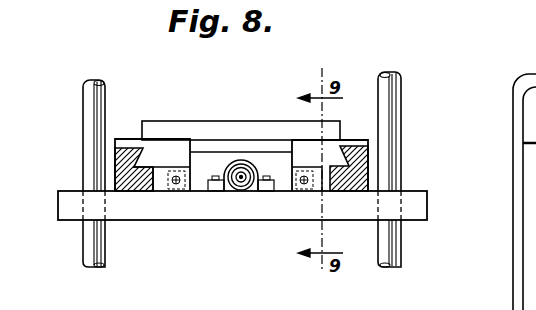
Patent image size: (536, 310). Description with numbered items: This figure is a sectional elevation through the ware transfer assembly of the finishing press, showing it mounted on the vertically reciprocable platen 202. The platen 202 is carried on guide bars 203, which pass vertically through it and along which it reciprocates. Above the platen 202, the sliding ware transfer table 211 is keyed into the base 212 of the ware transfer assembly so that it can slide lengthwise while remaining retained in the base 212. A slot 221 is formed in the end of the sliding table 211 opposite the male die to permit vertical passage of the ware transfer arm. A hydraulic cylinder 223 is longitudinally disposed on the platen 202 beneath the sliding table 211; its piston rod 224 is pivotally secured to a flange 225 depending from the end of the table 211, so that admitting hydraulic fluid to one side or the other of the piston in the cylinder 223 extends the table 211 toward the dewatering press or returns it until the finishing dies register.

The vertically reciprocable platen 202 is at (164, 213).
The guide bars 203 is at (397, 90).
The sliding ware transfer table 211 is at (164, 148).
The base of the ware transfer assembly 212 is at (360, 167).
The slot 221 is at (292, 150).
The hydraulic cylinder 223 is at (248, 195).
The piston rod 224 is at (233, 193).
The flange 225 is at (213, 150).